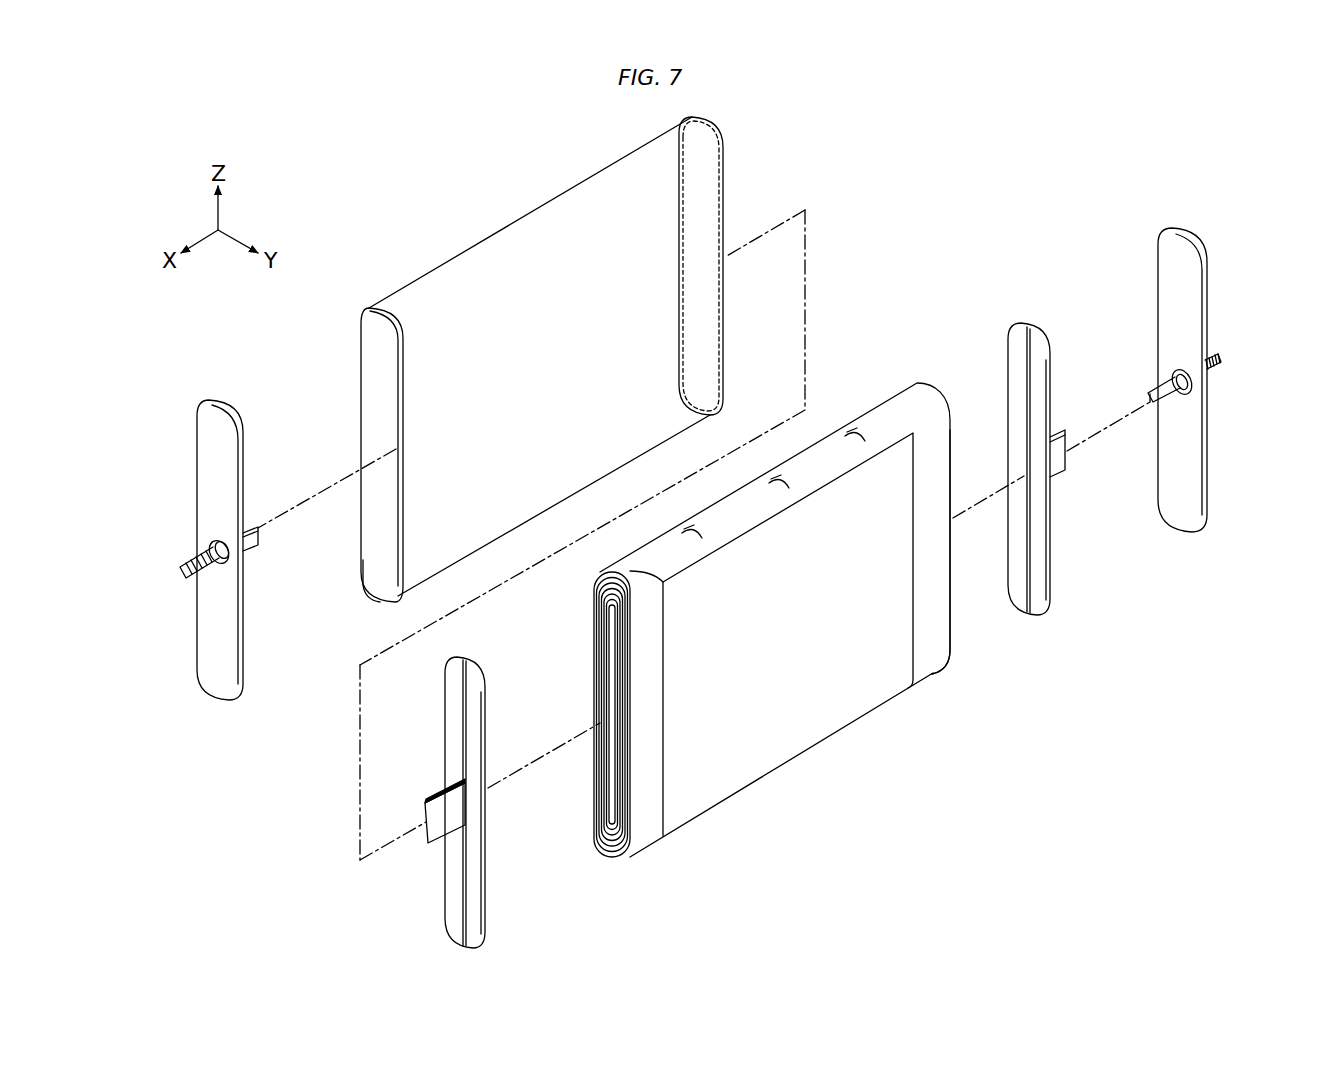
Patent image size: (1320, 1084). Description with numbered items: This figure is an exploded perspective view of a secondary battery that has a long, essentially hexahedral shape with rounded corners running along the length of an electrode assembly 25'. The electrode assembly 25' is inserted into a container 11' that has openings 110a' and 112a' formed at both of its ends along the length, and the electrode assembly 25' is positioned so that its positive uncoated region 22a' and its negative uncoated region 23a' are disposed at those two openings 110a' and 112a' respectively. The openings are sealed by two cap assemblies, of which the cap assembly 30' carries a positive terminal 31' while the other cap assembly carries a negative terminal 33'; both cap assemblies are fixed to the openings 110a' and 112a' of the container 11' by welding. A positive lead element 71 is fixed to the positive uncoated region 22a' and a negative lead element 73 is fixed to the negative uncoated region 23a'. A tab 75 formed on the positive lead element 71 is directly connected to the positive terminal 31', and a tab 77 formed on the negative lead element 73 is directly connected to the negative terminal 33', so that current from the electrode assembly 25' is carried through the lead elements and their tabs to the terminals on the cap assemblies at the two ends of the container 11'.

The container 11' is at (542, 375).
The opening 112a' is at (738, 266).
The opening 110a' is at (333, 596).
The cap assembly 30' is at (200, 582).
The positive terminal 31' is at (187, 585).
The positive lead element 71 is at (464, 777).
The tab 75 is at (428, 849).
The electrode assembly 25' is at (796, 637).
The positive uncoated region 22a' is at (650, 732).
The negative uncoated region 23a' is at (963, 584).
The negative lead element 73 is at (1067, 444).
The tab 77 is at (1070, 474).
The negative terminal 33' is at (1213, 369).